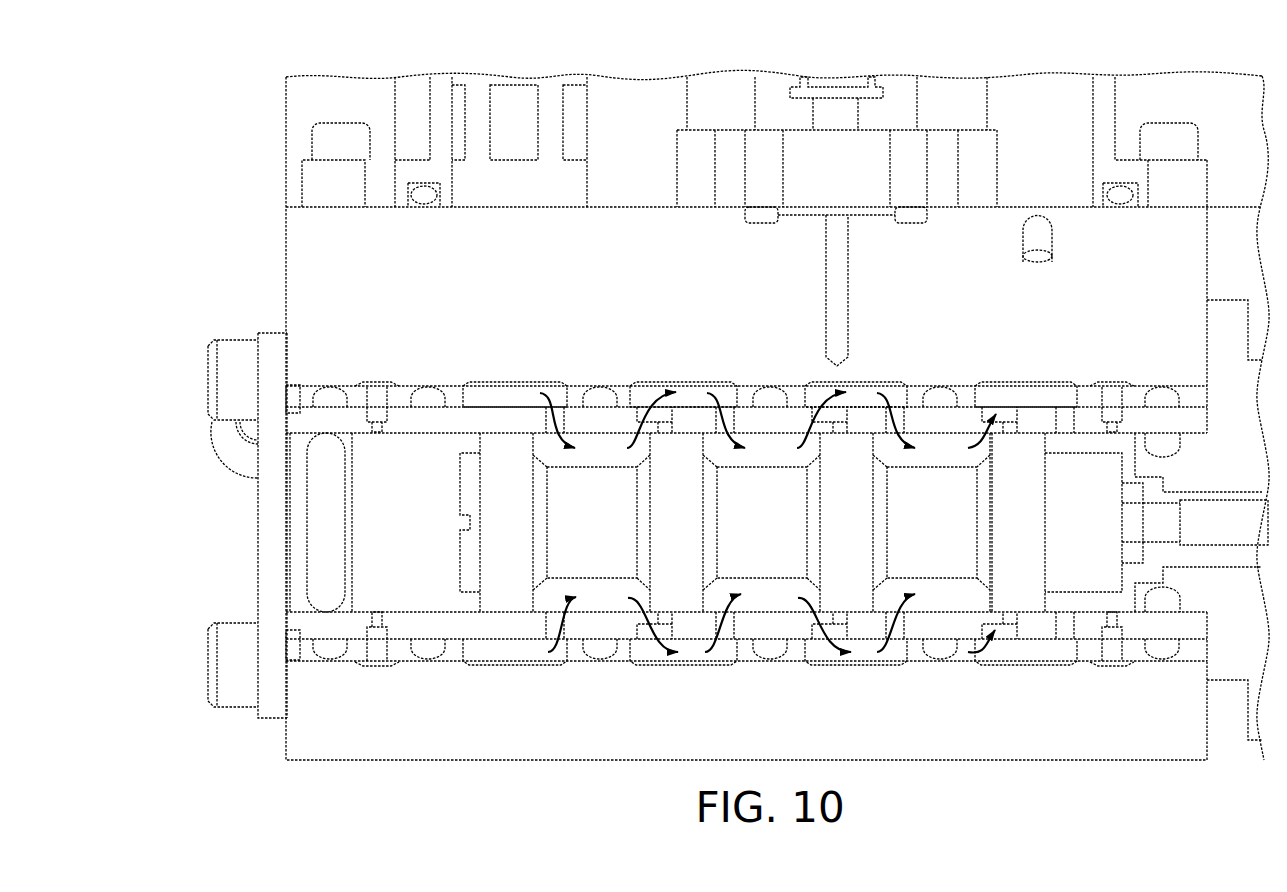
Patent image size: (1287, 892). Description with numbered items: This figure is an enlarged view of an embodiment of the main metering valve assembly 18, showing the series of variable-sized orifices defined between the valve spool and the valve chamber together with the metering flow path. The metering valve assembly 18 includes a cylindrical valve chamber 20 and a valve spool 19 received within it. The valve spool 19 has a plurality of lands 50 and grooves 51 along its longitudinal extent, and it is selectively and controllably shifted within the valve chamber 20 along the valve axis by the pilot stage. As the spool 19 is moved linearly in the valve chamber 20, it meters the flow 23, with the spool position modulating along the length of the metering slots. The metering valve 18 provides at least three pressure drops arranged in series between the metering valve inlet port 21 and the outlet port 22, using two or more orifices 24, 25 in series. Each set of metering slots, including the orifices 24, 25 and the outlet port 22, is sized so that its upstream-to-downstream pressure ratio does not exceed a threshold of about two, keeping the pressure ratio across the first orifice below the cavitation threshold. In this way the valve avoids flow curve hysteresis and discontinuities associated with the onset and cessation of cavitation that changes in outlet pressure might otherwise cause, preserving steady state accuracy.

The metering valve assembly 18 is at (203, 538).
The valve spool 19 is at (563, 542).
The cylindrical valve chamber 20 is at (298, 627).
The metering valve inlet port 21 is at (534, 664).
The outlet port 22 is at (1016, 659).
The flow 23 is at (549, 391).
The orifice 24 is at (655, 662).
The orifice 25 is at (815, 643).
The lands 50 is at (855, 450).
The grooves 51 is at (604, 450).